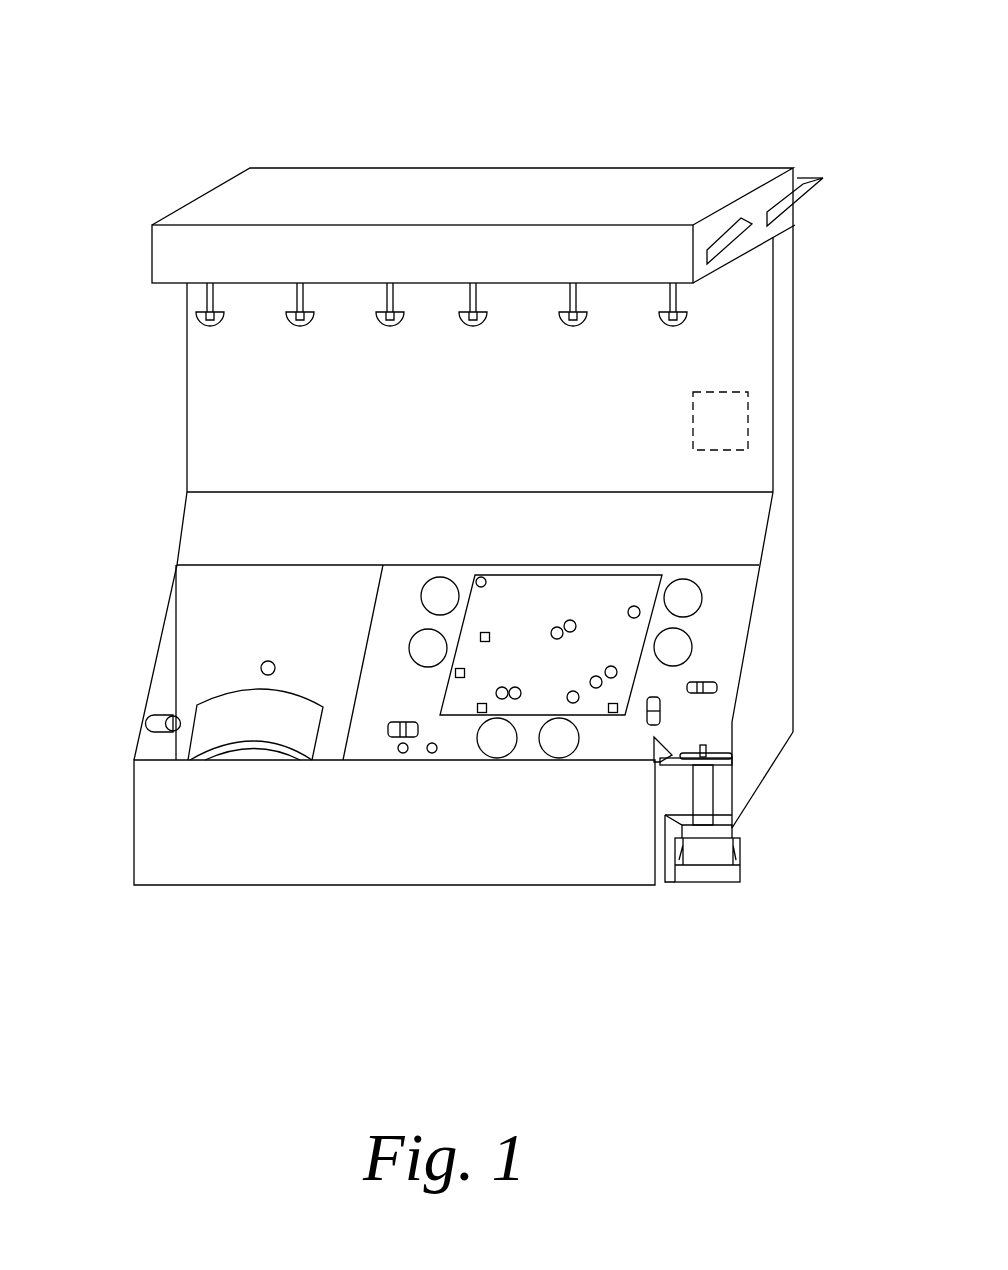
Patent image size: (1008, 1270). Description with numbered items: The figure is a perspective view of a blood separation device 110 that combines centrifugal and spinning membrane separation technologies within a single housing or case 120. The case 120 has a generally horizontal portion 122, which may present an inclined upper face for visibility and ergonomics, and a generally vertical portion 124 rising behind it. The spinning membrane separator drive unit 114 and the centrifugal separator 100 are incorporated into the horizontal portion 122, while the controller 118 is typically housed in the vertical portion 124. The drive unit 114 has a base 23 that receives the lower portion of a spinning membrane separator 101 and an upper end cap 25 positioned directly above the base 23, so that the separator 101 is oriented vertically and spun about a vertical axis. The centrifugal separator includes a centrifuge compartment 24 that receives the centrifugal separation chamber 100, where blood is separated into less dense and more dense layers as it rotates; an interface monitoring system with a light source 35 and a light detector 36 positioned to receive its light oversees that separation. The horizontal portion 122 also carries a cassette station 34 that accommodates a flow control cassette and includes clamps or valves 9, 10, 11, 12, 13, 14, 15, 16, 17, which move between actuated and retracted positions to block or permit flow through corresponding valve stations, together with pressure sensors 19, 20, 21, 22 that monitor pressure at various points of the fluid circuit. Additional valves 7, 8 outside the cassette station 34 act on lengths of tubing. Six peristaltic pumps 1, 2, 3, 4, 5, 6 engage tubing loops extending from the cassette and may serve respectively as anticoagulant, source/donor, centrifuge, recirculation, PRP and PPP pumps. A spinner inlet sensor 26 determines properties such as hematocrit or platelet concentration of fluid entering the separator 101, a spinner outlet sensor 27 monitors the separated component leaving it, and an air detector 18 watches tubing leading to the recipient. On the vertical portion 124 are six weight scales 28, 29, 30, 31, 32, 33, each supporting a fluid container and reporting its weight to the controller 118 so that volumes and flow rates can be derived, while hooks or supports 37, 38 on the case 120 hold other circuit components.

The blood separation device 110 is at (316, 86).
The generally vertical portion 124 is at (187, 377).
The case 120 is at (163, 512).
The generally horizontal portion 122 is at (134, 850).
The weight scale 28 is at (210, 326).
The weight scale 29 is at (300, 326).
The weight scale 30 is at (390, 326).
The weight scale 31 is at (473, 326).
The weight scale 32 is at (573, 326).
The weight scale 33 is at (673, 326).
The hook or support 37 is at (730, 244).
The hook or support 38 is at (780, 208).
The controller 118 is at (750, 418).
The cassette station 34 is at (662, 575).
The centrifugal separator 100 is at (285, 676).
The centrifuge compartment 24 is at (210, 662).
The light detector 36 is at (261, 665).
The light source 35 is at (145, 723).
The anticoagulant pump 1 is at (432, 578).
The source/donor pump 2 is at (409, 648).
The centrifuge pump 3 is at (497, 758).
The recirculation pump 4 is at (559, 758).
The PRP pump 5 is at (692, 647).
The PPP pump 6 is at (702, 598).
The clamp or valve 7 is at (403, 753).
The clamp or valve 8 is at (432, 753).
The clamp or valve 9 is at (502, 687).
The clamp or valve 10 is at (515, 699).
The clamp or valve 11 is at (479, 577).
The clamp or valve 12 is at (557, 627).
The clamp or valve 13 is at (571, 620).
The clamp or valve 14 is at (573, 703).
The clamp or valve 15 is at (596, 688).
The clamp or valve 16 is at (617, 672).
The clamp or valve 17 is at (634, 606).
The air detector 18 is at (392, 738).
The pressure sensor 19 is at (460, 678).
The pressure sensor 20 is at (482, 713).
The pressure sensor 21 is at (480, 637).
The pressure sensor 22 is at (613, 713).
The upper end cap 25 is at (735, 763).
The spinner inlet sensor 26 is at (660, 705).
The spinner outlet sensor 27 is at (717, 688).
The spinning membrane separator 101 is at (727, 795).
The base 23 is at (735, 828).
The spinning membrane separator drive unit 114 is at (692, 895).